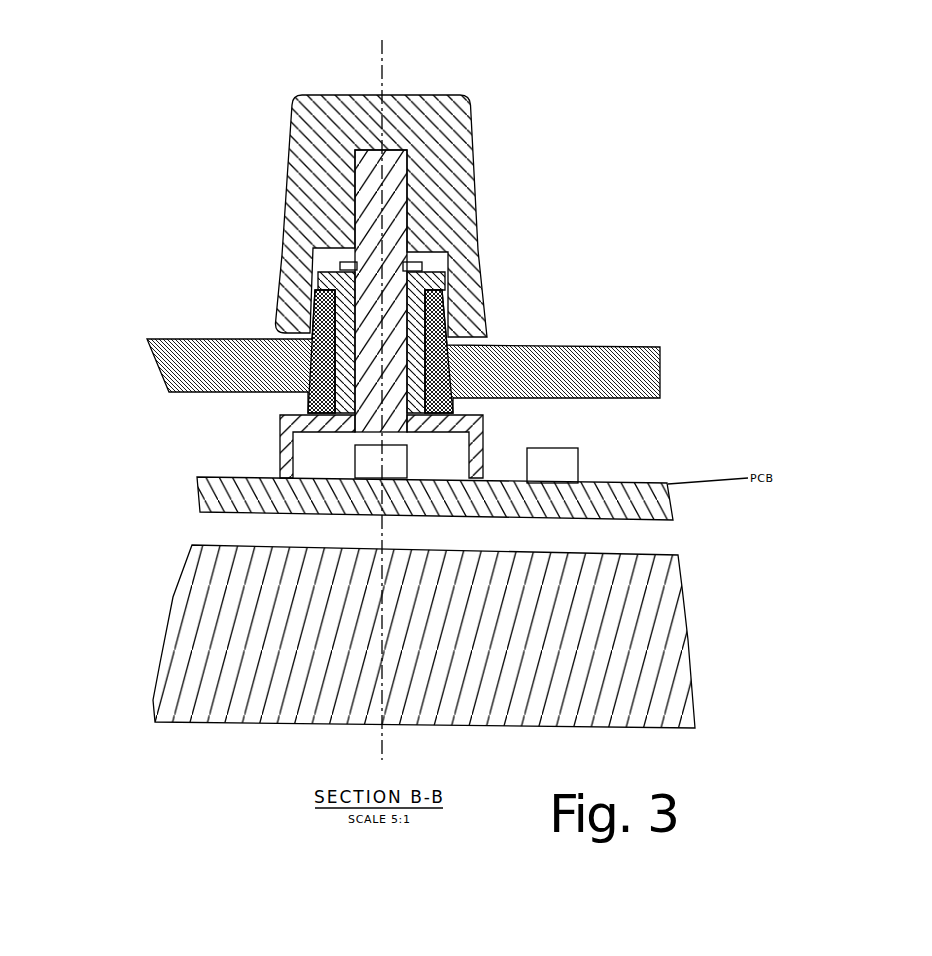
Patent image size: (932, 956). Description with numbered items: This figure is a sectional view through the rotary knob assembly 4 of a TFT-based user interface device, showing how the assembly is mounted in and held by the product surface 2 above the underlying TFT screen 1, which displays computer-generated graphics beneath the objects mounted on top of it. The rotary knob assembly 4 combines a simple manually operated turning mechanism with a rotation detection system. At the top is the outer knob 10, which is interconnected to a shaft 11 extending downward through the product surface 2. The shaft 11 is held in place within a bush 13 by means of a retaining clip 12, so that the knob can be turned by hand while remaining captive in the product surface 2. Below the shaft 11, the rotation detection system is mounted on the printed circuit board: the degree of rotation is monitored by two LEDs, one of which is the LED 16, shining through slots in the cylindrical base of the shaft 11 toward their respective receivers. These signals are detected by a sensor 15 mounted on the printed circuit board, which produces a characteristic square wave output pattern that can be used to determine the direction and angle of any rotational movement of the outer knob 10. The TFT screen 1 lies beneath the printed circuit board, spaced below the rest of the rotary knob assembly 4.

The TFT screen 1 is at (590, 551).
The product surface 2 is at (600, 346).
The rotary knob assembly 4 is at (72, 40).
The outer knob 10 is at (472, 128).
The shaft 11 is at (407, 170).
The retaining clip 12 is at (422, 266).
The bush 13 is at (445, 288).
The sensor 15 is at (410, 450).
The LED 16 is at (578, 459).